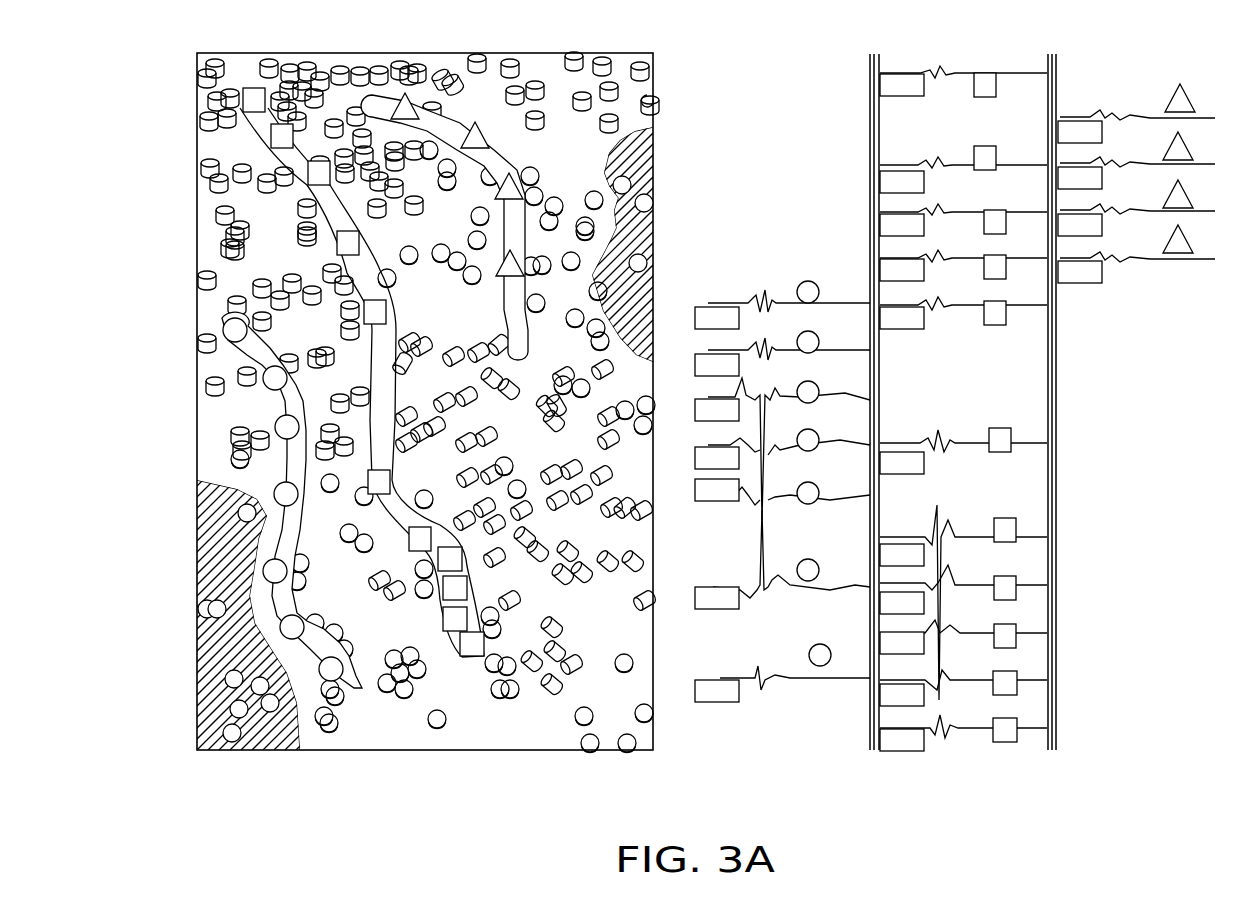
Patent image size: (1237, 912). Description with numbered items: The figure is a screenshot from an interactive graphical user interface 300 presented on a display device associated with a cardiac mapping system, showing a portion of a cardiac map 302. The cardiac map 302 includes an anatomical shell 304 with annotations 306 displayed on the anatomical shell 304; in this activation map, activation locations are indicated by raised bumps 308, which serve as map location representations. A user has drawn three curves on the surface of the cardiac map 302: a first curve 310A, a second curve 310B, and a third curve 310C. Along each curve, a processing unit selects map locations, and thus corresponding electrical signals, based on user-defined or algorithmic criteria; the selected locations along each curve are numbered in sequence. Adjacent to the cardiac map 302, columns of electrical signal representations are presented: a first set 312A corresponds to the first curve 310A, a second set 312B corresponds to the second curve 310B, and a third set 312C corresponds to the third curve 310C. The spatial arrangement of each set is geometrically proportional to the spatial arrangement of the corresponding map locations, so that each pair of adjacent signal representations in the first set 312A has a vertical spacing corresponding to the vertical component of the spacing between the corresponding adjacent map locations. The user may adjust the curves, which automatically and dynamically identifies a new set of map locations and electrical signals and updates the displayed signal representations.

The interactive graphical user interface 300 is at (118, 50).
The cardiac map 302 is at (266, 760).
The anatomical shell 304 is at (630, 147).
The annotations 306 is at (668, 90).
The raised bumps 308 is at (631, 185).
The first curve 310A is at (356, 692).
The second curve 310B is at (488, 590).
The third curve 310C is at (522, 165).
The first set of electrical signal representations 312A is at (816, 740).
The second set of electrical signal representations 312B is at (968, 755).
The third set of electrical signal representations 312C is at (1148, 736).